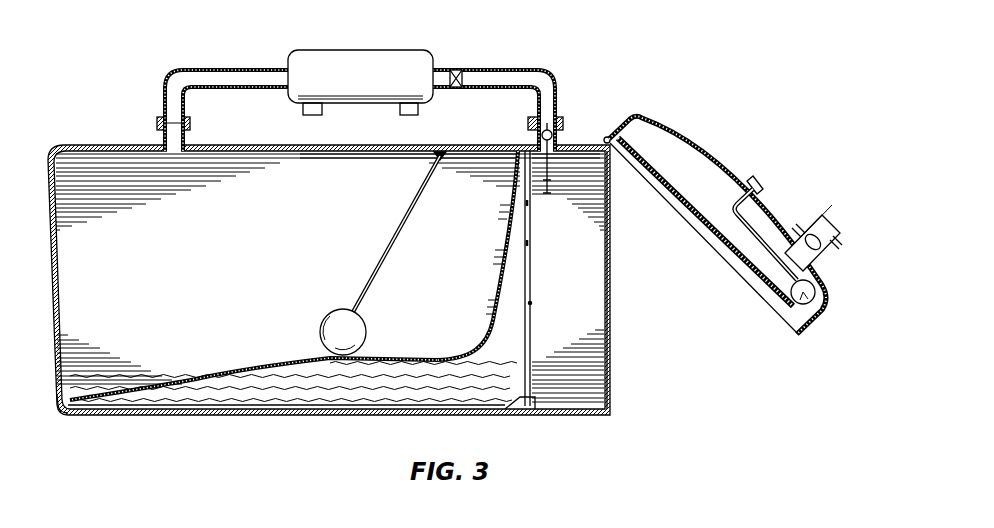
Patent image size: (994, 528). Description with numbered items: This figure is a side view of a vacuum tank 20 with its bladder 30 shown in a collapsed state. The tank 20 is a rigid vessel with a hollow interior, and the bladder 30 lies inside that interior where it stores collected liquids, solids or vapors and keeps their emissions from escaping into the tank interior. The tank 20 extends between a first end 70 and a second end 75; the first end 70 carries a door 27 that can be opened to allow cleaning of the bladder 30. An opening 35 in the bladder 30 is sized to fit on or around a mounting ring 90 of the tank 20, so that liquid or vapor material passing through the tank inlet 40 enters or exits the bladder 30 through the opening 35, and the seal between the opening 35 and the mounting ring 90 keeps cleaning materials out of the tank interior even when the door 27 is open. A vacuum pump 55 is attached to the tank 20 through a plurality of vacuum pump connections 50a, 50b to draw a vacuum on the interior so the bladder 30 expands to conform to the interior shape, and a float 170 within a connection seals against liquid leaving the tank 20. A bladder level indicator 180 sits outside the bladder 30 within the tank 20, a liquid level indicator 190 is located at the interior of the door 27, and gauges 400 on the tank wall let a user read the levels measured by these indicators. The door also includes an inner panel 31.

The vacuum tank 20 is at (135, 145).
The vacuum pump 55 is at (362, 50).
The vacuum pump connection 50a is at (191, 126).
The vacuum pump connection 50b is at (528, 127).
The float 170 is at (551, 131).
The door 27 is at (710, 147).
The gauges 400 is at (755, 178).
The tank inlet 40 is at (821, 222).
The door inner panel 31 is at (735, 255).
The liquid level indicator 190 is at (790, 320).
The first end 70 is at (608, 368).
The bladder level indicator 180 is at (378, 256).
The opening 35 is at (533, 262).
The mounting ring 90 is at (532, 303).
The bladder 30 is at (240, 372).
The second end 75 is at (62, 405).